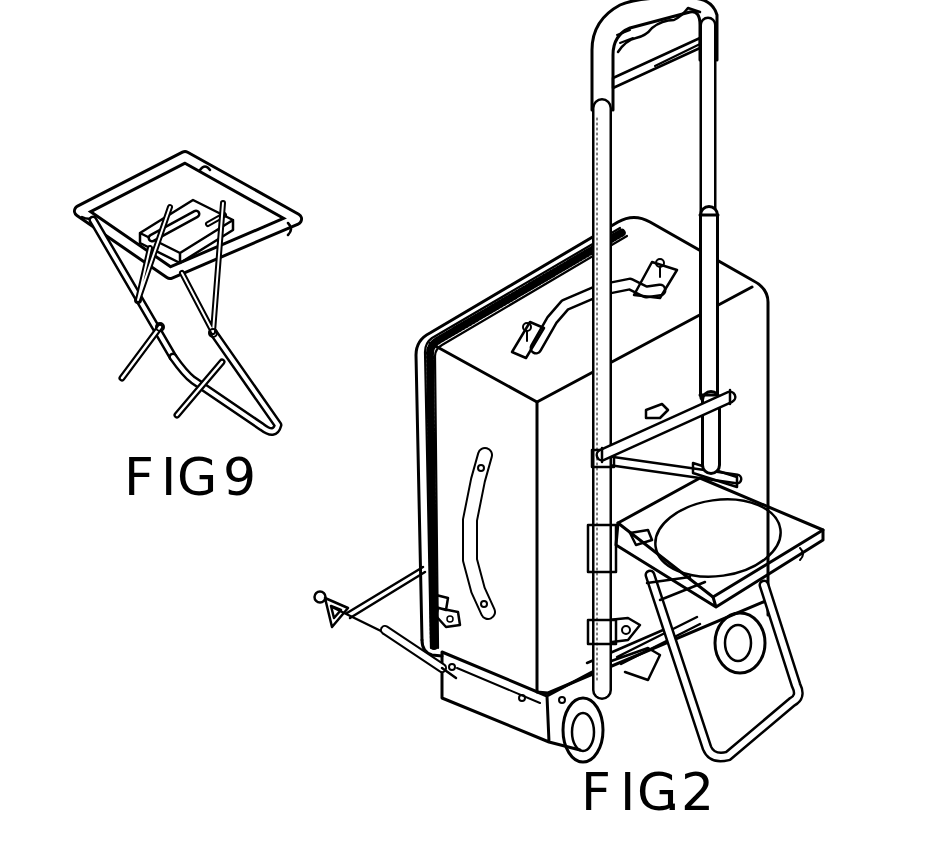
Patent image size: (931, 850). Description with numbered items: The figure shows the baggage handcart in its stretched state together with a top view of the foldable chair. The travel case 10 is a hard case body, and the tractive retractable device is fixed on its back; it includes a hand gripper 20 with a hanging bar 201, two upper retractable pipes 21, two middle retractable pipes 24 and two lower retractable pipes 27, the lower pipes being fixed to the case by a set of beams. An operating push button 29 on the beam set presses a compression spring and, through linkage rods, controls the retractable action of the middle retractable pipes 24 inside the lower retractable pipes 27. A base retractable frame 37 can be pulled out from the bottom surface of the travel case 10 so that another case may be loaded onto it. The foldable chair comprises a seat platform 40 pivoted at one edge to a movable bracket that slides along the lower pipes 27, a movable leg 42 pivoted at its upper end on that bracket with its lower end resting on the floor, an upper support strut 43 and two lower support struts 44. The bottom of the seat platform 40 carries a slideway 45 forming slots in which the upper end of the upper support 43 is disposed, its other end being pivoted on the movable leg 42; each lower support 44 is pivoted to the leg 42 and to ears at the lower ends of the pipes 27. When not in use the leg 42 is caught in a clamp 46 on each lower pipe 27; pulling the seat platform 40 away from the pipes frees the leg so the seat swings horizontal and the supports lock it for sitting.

In FIG. 2, the travel case 10 is at (768, 325).
In FIG. 2, the hand gripper 20 is at (719, 13).
In FIG. 2, the hanging bar 201 is at (655, 79).
In FIG. 2, the upper retractable pipes 21 is at (717, 112).
In FIG. 2, the middle retractable pipes 24 is at (720, 250).
In FIG. 2, the lower retractable pipes 27 is at (720, 436).
In FIG. 2, the operating push button 29 is at (655, 410).
In FIG. 2, the base retractable frame 37 is at (381, 598).
In FIG. 9, the seat platform 40 is at (256, 185).
In FIG. 2, the seat platform 40 is at (797, 518).
In FIG. 9, the movable leg 42 is at (240, 356).
In FIG. 2, the movable leg 42 is at (789, 670).
In FIG. 9, the upper support strut 43 is at (220, 302).
In FIG. 9, the lower support struts 44 is at (134, 361).
In FIG. 9, the slideway 45 is at (132, 268).
In FIG. 2, the clamp 46 is at (632, 624).